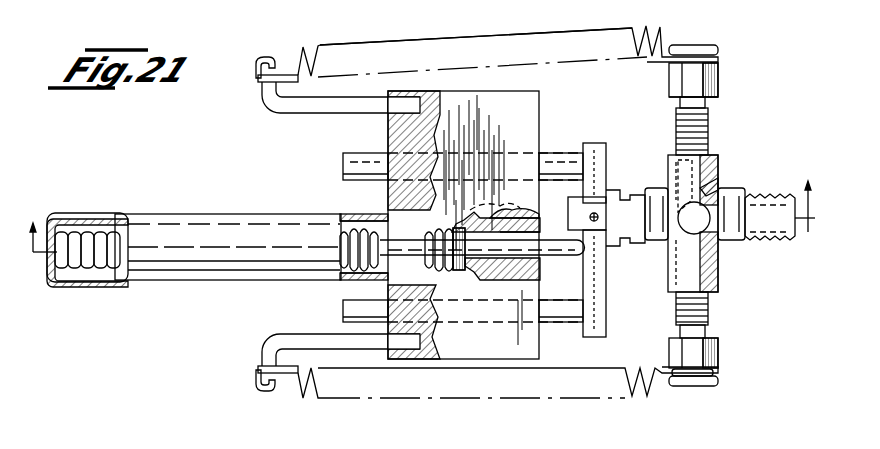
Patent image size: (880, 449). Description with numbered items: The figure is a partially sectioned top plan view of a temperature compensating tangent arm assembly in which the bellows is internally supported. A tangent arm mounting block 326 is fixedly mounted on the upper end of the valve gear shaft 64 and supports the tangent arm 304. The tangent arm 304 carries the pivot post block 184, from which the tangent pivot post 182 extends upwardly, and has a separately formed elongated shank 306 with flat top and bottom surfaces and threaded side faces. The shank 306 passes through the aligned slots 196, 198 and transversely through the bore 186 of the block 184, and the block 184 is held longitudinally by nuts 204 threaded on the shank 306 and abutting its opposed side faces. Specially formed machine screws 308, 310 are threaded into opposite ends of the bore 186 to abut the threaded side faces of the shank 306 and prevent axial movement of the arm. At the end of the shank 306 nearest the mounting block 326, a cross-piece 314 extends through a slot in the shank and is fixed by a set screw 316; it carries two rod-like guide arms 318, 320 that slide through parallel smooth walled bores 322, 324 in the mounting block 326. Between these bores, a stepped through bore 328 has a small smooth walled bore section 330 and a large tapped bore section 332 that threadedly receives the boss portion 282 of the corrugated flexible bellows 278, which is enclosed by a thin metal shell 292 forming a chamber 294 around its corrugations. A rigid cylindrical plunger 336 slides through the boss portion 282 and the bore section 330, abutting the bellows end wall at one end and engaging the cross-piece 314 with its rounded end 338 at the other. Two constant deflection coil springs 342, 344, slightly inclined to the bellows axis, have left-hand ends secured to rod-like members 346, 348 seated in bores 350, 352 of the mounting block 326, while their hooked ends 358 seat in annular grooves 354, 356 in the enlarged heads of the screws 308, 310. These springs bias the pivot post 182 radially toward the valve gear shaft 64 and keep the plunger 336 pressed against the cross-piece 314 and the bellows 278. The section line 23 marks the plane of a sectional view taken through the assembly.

The section line 23 is at (422, 216).
The valve gear shaft 64 is at (489, 203).
The tangent pivot post 182 is at (680, 212).
The pivot post block 184 is at (668, 150).
The through bore 186 is at (710, 150).
The slot 196 is at (718, 258).
The slot 198 is at (718, 195).
The nut 204 is at (660, 240).
The corrugated flexible bellows 278 is at (80, 268).
The boss portion 282 is at (465, 270).
The shell 292 is at (175, 282).
The chamber 294 is at (60, 224).
The tangent arm 304 is at (614, 128).
The shank 306 is at (772, 240).
The machine screw 308 is at (718, 350).
The machine screw 310 is at (718, 76).
The cross-piece 314 is at (600, 283).
The set screw 316 is at (585, 215).
The guide arm 318 is at (555, 300).
The guide arm 320 is at (555, 163).
The bore 322 is at (452, 306).
The bore 324 is at (380, 160).
The tangent arm mounting block 326 is at (539, 112).
The stepped through bore 328 is at (520, 258).
The bore section 330 is at (515, 196).
The tapped bore section 332 is at (490, 276).
The plunger 336 is at (412, 247).
The rounded end 338 is at (546, 250).
The constant deflection coil spring 342 is at (322, 398).
The constant deflection coil spring 344 is at (318, 50).
The rod-like member 346 is at (280, 334).
The rod-like member 348 is at (300, 113).
The bore 350 is at (420, 341).
The bore 352 is at (404, 104).
The annular groove 354 is at (712, 372).
The annular groove 356 is at (700, 55).
The hooked end 358 is at (712, 45).